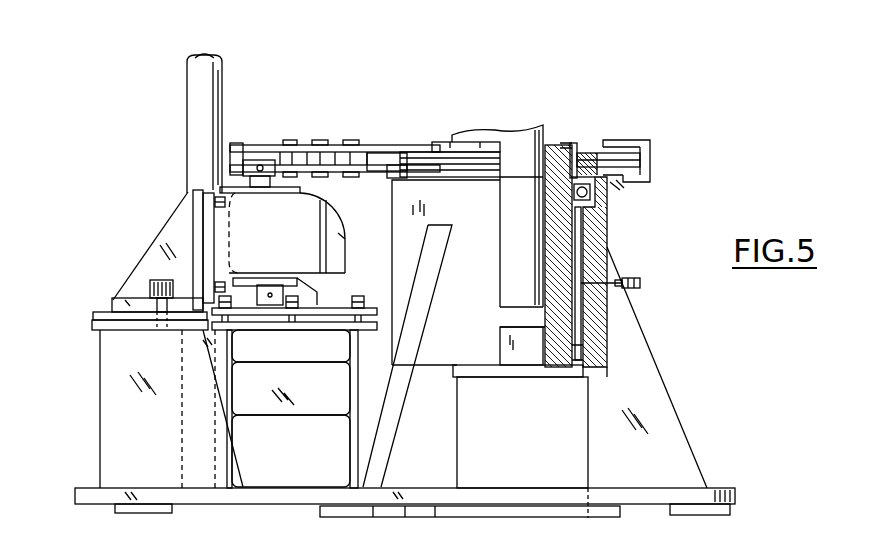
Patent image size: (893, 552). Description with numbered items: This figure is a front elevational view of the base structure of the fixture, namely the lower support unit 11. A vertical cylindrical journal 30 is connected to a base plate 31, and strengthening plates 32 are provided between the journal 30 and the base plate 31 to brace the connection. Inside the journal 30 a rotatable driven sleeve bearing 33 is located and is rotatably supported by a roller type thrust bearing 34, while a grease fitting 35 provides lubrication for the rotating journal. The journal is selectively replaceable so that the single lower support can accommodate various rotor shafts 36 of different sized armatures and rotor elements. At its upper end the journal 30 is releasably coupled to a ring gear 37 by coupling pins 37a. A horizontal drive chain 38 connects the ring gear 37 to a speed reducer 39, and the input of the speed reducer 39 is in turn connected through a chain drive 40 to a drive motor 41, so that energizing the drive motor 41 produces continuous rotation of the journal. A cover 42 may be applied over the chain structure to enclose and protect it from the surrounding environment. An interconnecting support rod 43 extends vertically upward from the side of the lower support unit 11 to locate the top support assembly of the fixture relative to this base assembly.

The lower support unit 11 is at (283, 122).
The vertical cylindrical journal 30 is at (462, 247).
The base plate 31 is at (725, 490).
The strengthening plates 32 is at (592, 435).
The rotatable driven sleeve bearing 33 is at (448, 138).
The roller type thrust bearing 34 is at (588, 192).
The grease fitting 35 is at (640, 283).
The rotor shaft 36 is at (528, 135).
The ring gear 37 is at (385, 160).
The coupling pins 37a is at (573, 143).
The horizontal drive chain 38 is at (325, 145).
The speed reducer 39 is at (290, 239).
The chain drive 40 is at (292, 315).
The drive motor 41 is at (345, 230).
The cover 42 is at (650, 153).
The interconnecting support rod 43 is at (193, 150).